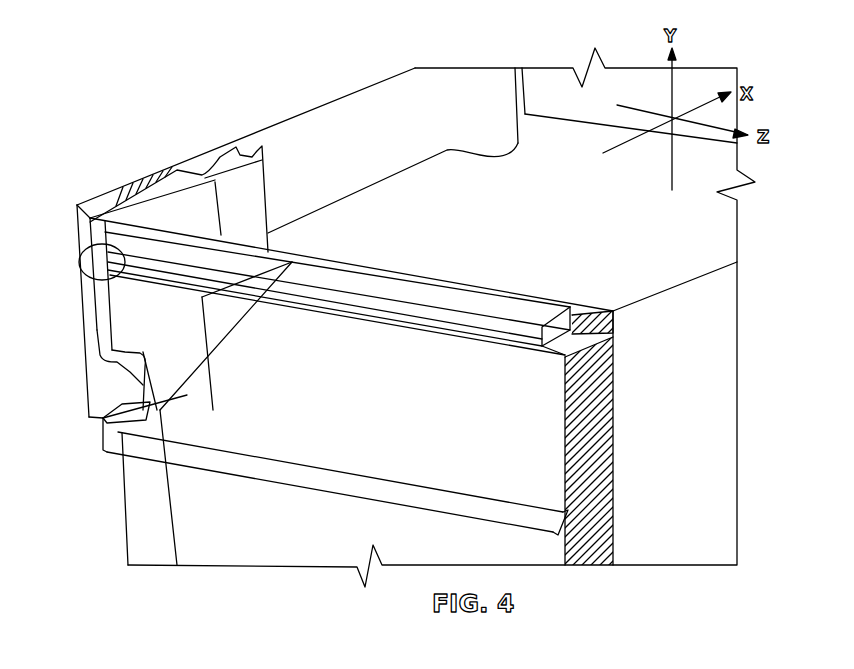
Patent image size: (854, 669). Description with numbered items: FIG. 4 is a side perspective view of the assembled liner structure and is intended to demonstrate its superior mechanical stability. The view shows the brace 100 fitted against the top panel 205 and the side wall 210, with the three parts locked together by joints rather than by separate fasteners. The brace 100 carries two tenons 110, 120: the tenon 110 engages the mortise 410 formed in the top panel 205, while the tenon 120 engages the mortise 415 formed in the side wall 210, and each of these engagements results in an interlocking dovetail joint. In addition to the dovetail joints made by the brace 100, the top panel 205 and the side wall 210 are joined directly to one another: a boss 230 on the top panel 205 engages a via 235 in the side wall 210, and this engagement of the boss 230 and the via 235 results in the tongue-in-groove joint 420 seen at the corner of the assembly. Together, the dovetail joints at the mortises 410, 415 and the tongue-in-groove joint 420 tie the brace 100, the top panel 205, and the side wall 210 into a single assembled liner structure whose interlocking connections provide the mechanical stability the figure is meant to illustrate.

The brace 100 is at (83, 233).
The tenon 110 is at (237, 150).
The tenon 120 is at (112, 377).
The top panel 205 is at (412, 120).
The side wall 210 is at (143, 492).
The boss 230 is at (80, 262).
The via 235 is at (127, 242).
The mortise 410 is at (222, 177).
The mortise 415 is at (100, 410).
The tongue-in-groove joint 420 is at (540, 327).